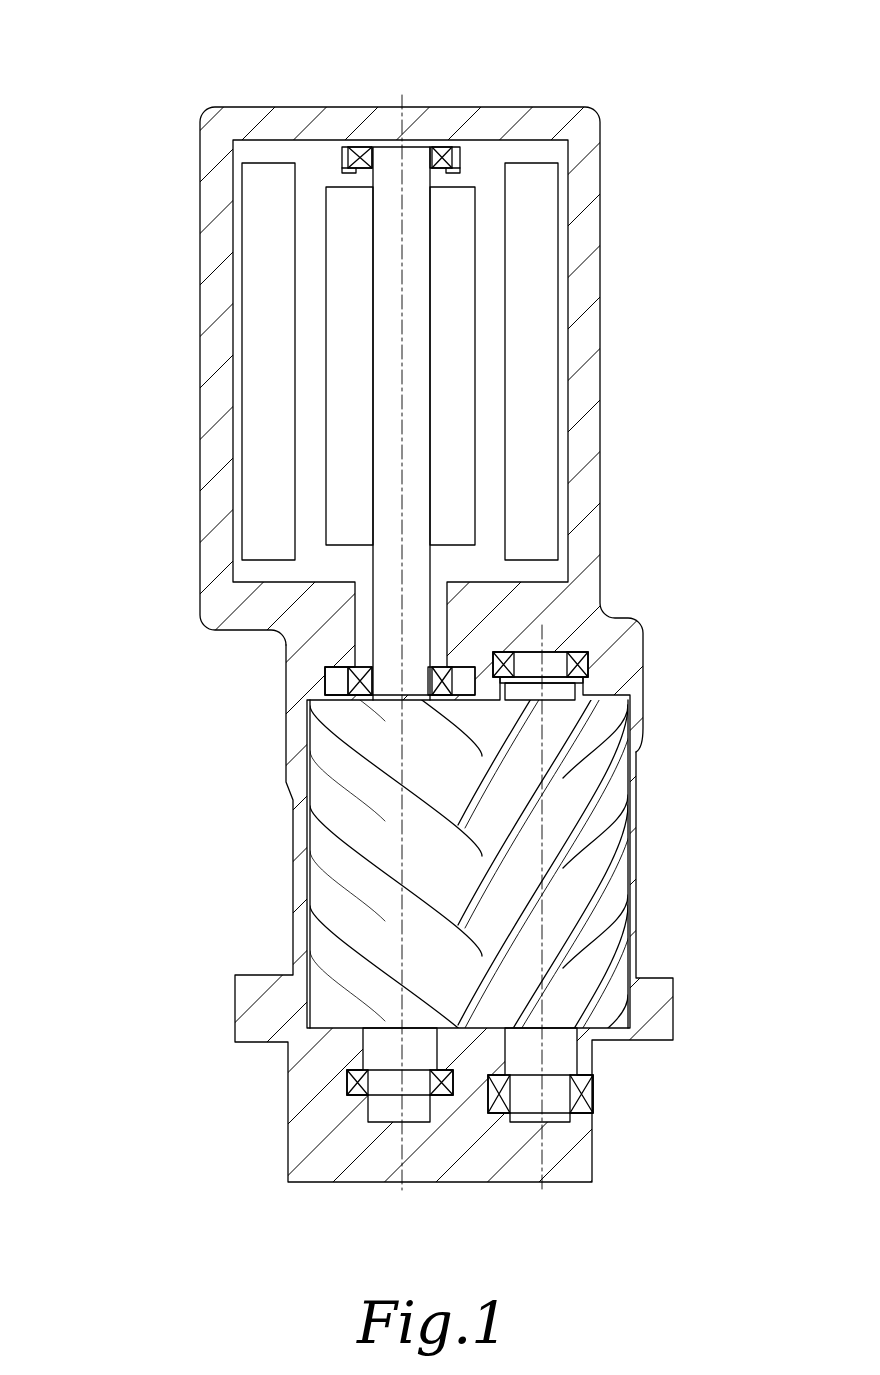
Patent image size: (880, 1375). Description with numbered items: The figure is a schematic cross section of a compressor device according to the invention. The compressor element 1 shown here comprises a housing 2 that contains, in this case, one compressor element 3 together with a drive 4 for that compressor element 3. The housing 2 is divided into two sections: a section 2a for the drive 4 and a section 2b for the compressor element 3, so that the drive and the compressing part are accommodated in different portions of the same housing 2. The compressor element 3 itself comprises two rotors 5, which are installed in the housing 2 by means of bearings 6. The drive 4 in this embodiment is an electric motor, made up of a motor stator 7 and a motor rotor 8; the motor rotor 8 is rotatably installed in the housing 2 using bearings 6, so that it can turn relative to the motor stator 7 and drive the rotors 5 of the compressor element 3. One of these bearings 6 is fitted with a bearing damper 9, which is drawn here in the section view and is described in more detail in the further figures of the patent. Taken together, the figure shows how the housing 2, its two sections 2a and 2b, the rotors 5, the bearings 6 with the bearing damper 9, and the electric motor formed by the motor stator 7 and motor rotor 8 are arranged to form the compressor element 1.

The compressor element 1 is at (125, 54).
The housing 2 is at (638, 634).
The section for the drive 2a is at (607, 860).
The section for compressor element 2b is at (592, 374).
The compressor element 3 is at (153, 783).
The drive 4 is at (150, 372).
The rotors 5 is at (523, 892).
The bearings 6 is at (362, 146).
The motor stator 7 is at (270, 215).
The motor rotor 8 is at (414, 172).
The bearing damper 9 is at (327, 673).